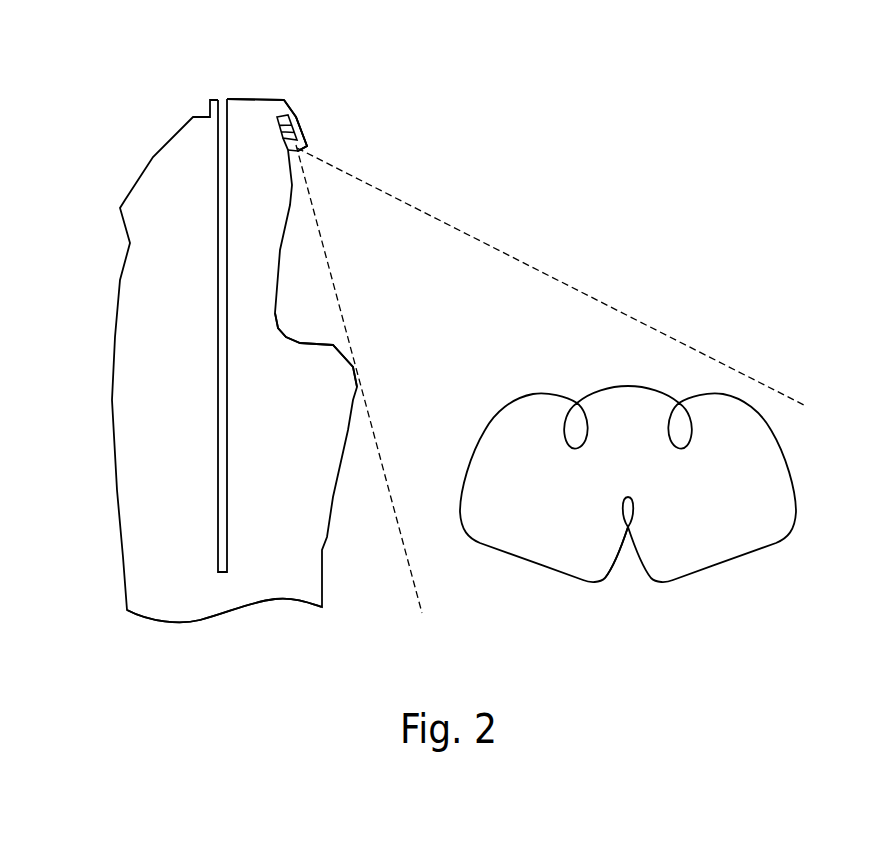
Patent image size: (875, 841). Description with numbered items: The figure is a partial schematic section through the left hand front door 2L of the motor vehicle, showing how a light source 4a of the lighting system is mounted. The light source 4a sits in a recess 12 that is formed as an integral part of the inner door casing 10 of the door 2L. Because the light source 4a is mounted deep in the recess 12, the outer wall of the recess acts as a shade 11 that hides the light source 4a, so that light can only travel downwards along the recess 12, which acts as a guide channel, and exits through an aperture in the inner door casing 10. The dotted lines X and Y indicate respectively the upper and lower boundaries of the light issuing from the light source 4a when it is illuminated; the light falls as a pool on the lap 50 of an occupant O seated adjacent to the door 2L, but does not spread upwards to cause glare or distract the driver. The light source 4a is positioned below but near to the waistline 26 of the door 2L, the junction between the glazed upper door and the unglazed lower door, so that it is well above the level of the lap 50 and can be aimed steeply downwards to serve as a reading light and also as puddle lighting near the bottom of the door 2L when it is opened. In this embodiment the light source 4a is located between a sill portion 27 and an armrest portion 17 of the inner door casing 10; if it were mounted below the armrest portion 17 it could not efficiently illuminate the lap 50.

The inner door casing 10 is at (325, 591).
The waistline 26 is at (232, 98).
The recess 12 is at (282, 114).
The sill portion 27 is at (296, 110).
The light source 4a is at (304, 136).
The shade 11 is at (309, 149).
The armrest portion 17 is at (303, 338).
The upper boundary of light X is at (474, 234).
The lower boundary of light Y is at (355, 355).
The left hand front door 2L is at (170, 626).
The lap 50 is at (567, 380).
The occupant O is at (605, 582).